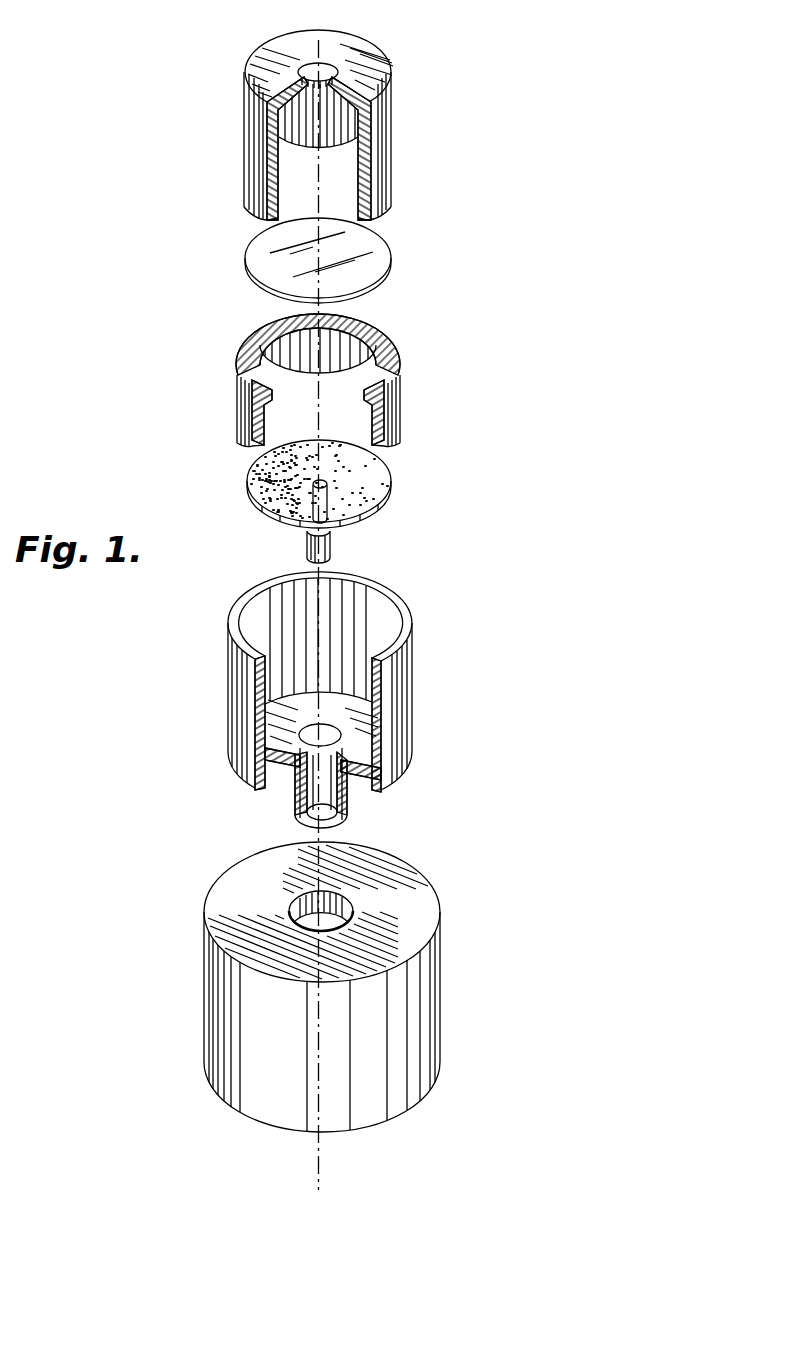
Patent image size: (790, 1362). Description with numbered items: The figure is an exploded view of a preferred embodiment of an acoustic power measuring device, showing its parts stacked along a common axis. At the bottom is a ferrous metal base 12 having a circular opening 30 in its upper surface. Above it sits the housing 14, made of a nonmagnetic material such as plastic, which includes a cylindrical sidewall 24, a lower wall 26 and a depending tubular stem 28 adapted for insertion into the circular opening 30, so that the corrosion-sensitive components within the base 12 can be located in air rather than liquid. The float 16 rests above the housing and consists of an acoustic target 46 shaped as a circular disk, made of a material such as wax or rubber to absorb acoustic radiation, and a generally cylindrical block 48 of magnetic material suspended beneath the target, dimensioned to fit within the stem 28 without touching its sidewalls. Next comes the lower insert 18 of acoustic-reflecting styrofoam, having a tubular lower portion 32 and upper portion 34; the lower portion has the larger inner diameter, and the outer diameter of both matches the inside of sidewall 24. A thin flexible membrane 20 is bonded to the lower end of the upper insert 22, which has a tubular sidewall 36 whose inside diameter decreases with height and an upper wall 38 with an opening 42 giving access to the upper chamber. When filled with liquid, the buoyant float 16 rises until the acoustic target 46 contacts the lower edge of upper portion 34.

The ferrous metal base 12 is at (351, 987).
The housing 14 is at (352, 709).
The float 16 is at (321, 497).
The lower insert 18 is at (315, 398).
The membrane 20 is at (382, 263).
The upper insert 22 is at (332, 116).
The cylindrical sidewall 24 is at (410, 622).
The lower wall 26 is at (290, 758).
The tubular stem 28 is at (350, 810).
The circular opening 30 is at (340, 920).
The lower portion 32 is at (258, 447).
The upper portion 34 is at (258, 410).
The tubular sidewall 36 is at (257, 148).
The upper wall 38 is at (262, 62).
The opening 42 is at (340, 66).
The acoustic target 46 is at (258, 502).
The block 48 is at (306, 548).